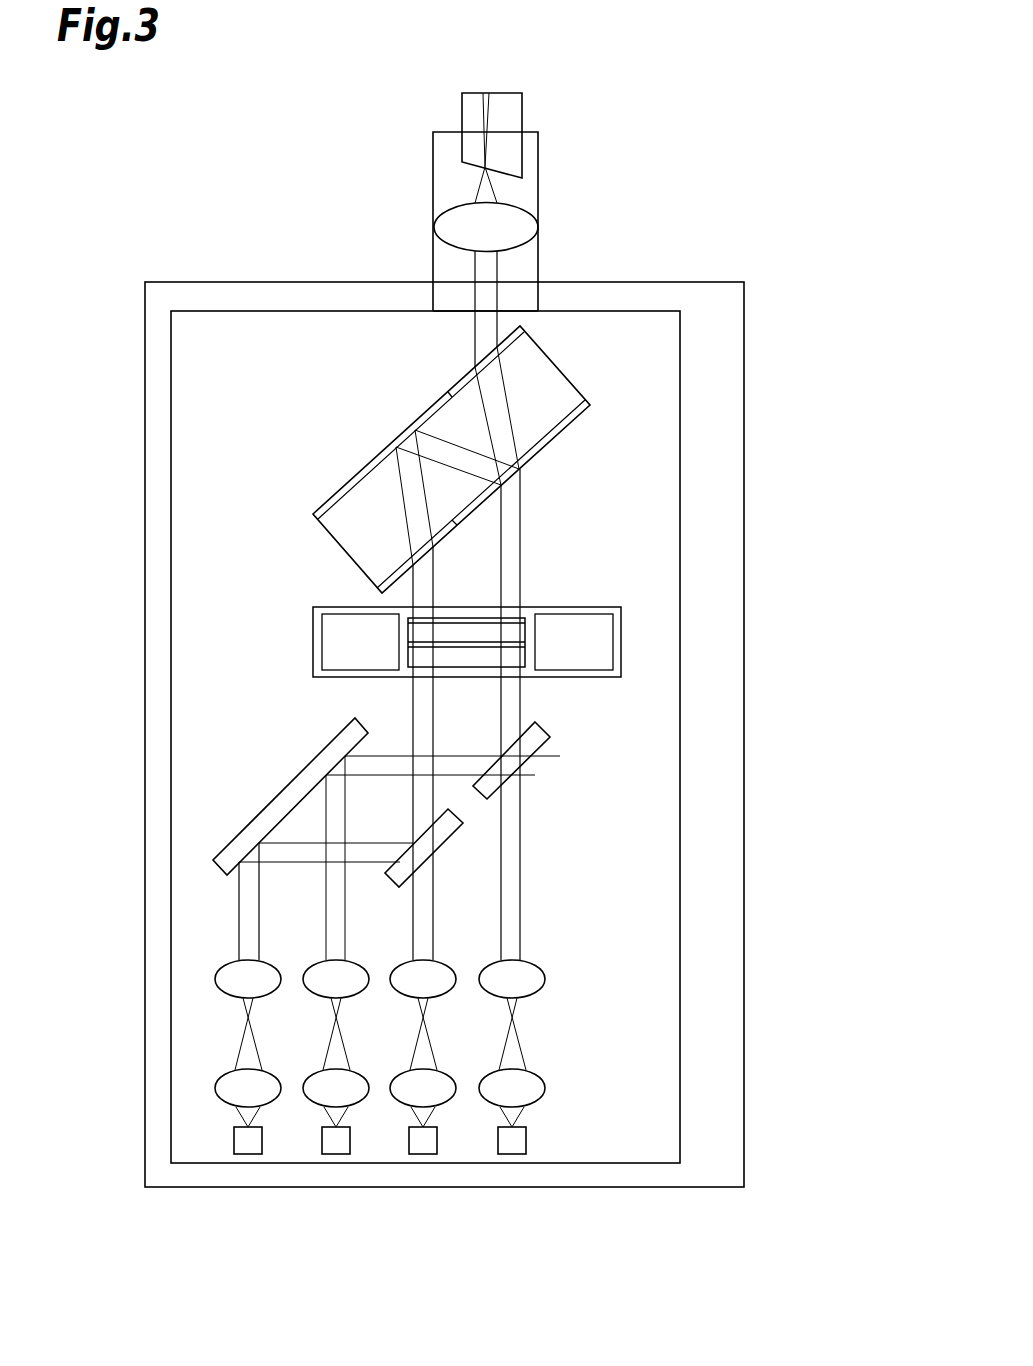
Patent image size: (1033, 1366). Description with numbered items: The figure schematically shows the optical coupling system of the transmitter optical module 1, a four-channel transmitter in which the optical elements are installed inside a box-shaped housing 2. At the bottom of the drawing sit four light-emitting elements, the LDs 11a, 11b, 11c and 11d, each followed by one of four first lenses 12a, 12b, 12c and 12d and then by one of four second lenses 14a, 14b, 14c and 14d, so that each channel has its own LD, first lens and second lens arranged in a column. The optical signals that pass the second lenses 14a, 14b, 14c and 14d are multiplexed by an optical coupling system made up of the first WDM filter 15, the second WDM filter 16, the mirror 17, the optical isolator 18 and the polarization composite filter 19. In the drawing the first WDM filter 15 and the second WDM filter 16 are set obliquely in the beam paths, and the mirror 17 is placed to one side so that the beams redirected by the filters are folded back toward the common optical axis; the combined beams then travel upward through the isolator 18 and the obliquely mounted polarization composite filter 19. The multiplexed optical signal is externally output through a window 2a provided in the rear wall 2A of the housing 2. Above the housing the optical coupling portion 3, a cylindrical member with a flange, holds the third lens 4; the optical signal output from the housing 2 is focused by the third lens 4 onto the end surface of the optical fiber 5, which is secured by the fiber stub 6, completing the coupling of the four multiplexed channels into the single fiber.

The transmitter optical module 1 is at (680, 84).
The housing 2 is at (730, 807).
The rear wall 2A is at (379, 299).
The window 2a is at (530, 296).
The optical coupling portion 3 is at (540, 192).
The third lens 4 is at (523, 223).
The optical fiber 5 is at (485, 157).
The fiber stub 6 is at (515, 111).
The LD 11a is at (247, 1140).
The LD 11b is at (336, 1140).
The LD 11c is at (423, 1140).
The LD 11d is at (512, 1140).
The first lens 12a is at (238, 1087).
The first lens 12b is at (328, 1084).
The first lens 12c is at (433, 1084).
The first lens 12d is at (525, 1086).
The second lens 14a is at (238, 980).
The second lens 14b is at (328, 986).
The second lens 14c is at (430, 977).
The second lens 14d is at (523, 975).
The first WDM filter 15 is at (420, 851).
The second WDM filter 16 is at (524, 751).
The mirror 17 is at (288, 797).
The isolator 18 is at (588, 645).
The polarization composite filter 19 is at (545, 387).